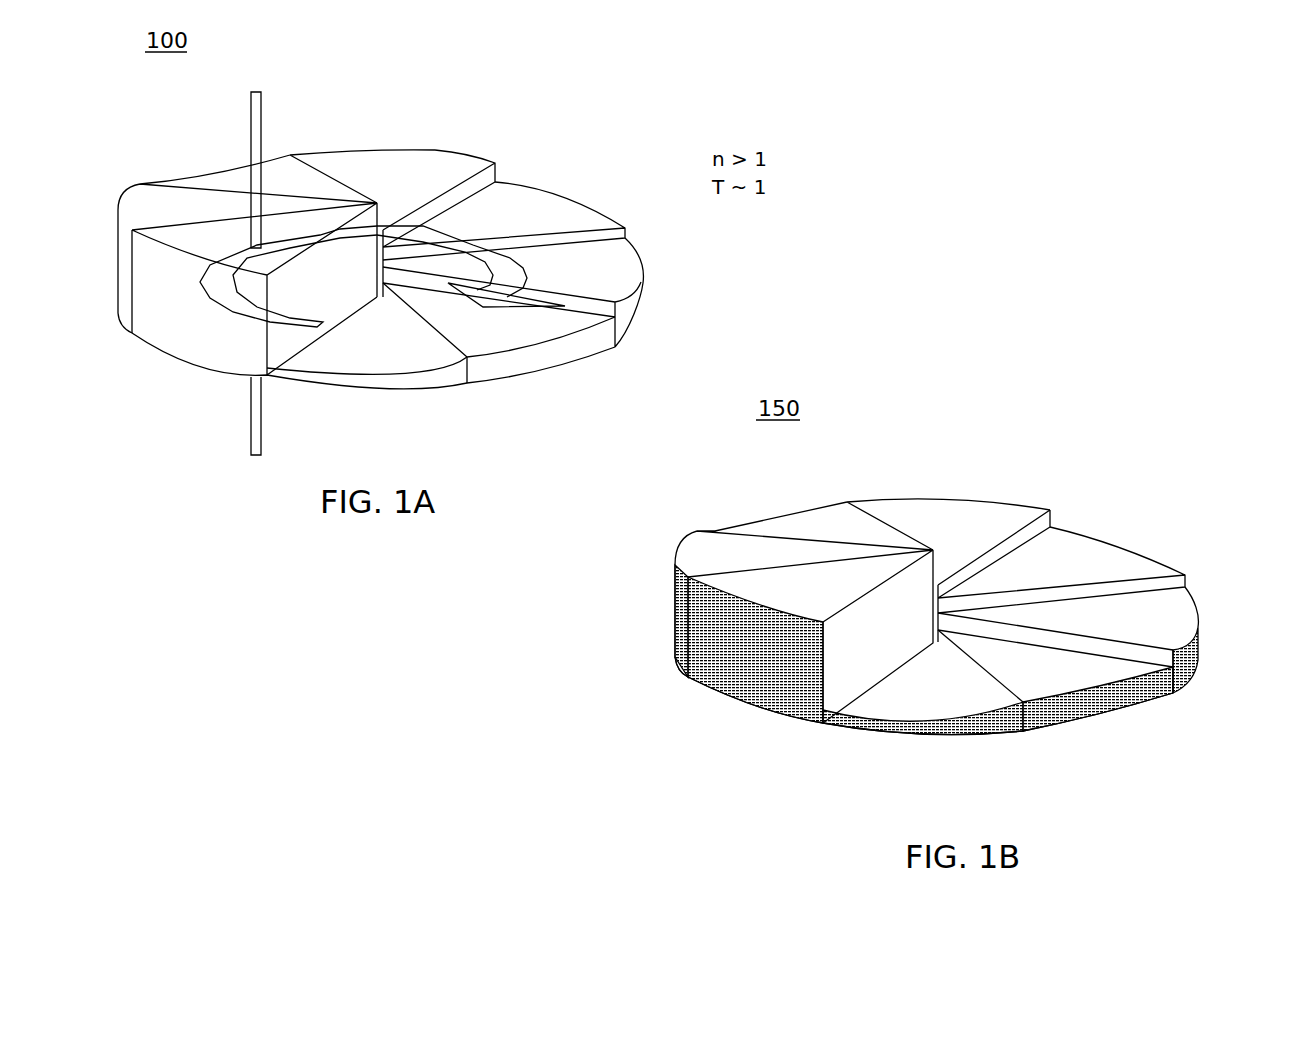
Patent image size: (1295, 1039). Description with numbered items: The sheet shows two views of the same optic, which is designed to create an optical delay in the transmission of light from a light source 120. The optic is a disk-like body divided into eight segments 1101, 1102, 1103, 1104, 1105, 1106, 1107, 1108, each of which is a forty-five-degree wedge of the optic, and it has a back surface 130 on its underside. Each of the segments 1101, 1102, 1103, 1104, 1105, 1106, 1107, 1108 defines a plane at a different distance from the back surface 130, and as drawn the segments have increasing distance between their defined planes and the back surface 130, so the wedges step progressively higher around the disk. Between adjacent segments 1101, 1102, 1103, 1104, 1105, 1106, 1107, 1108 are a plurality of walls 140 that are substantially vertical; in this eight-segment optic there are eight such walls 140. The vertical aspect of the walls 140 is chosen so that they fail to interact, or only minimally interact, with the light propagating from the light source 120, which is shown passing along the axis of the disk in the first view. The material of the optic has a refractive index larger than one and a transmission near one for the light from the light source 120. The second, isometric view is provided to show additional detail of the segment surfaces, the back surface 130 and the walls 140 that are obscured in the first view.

In FIG. 1A, the light source 120 is at (248, 118).
In FIG. 1A, the back surface 130 is at (185, 350).
In FIG. 1B, the back surface 130 is at (735, 710).
In FIG. 1A, the walls 140 is at (626, 236).
In FIG. 1B, the walls 140 is at (840, 685).
In FIG. 1A, the first segment 1101 is at (400, 362).
In FIG. 1B, the first segment 1101 is at (955, 707).
In FIG. 1A, the second segment 1102 is at (540, 330).
In FIG. 1B, the second segment 1102 is at (1095, 680).
In FIG. 1A, the third segment 1103 is at (633, 268).
In FIG. 1B, the third segment 1103 is at (1185, 625).
In FIG. 1A, the fourth segment 1104 is at (540, 195).
In FIG. 1B, the fourth segment 1104 is at (1095, 540).
In FIG. 1A, the fifth segment 1105 is at (430, 160).
In FIG. 1B, the fifth segment 1105 is at (985, 510).
In FIG. 1A, the sixth segment 1106 is at (282, 163).
In FIG. 1B, the sixth segment 1106 is at (838, 500).
In FIG. 1A, the seventh segment 1107 is at (140, 205).
In FIG. 1B, the seventh segment 1107 is at (695, 548).
In FIG. 1A, the eighth segment 1108 is at (177, 242).
In FIG. 1B, the eighth segment 1108 is at (722, 585).